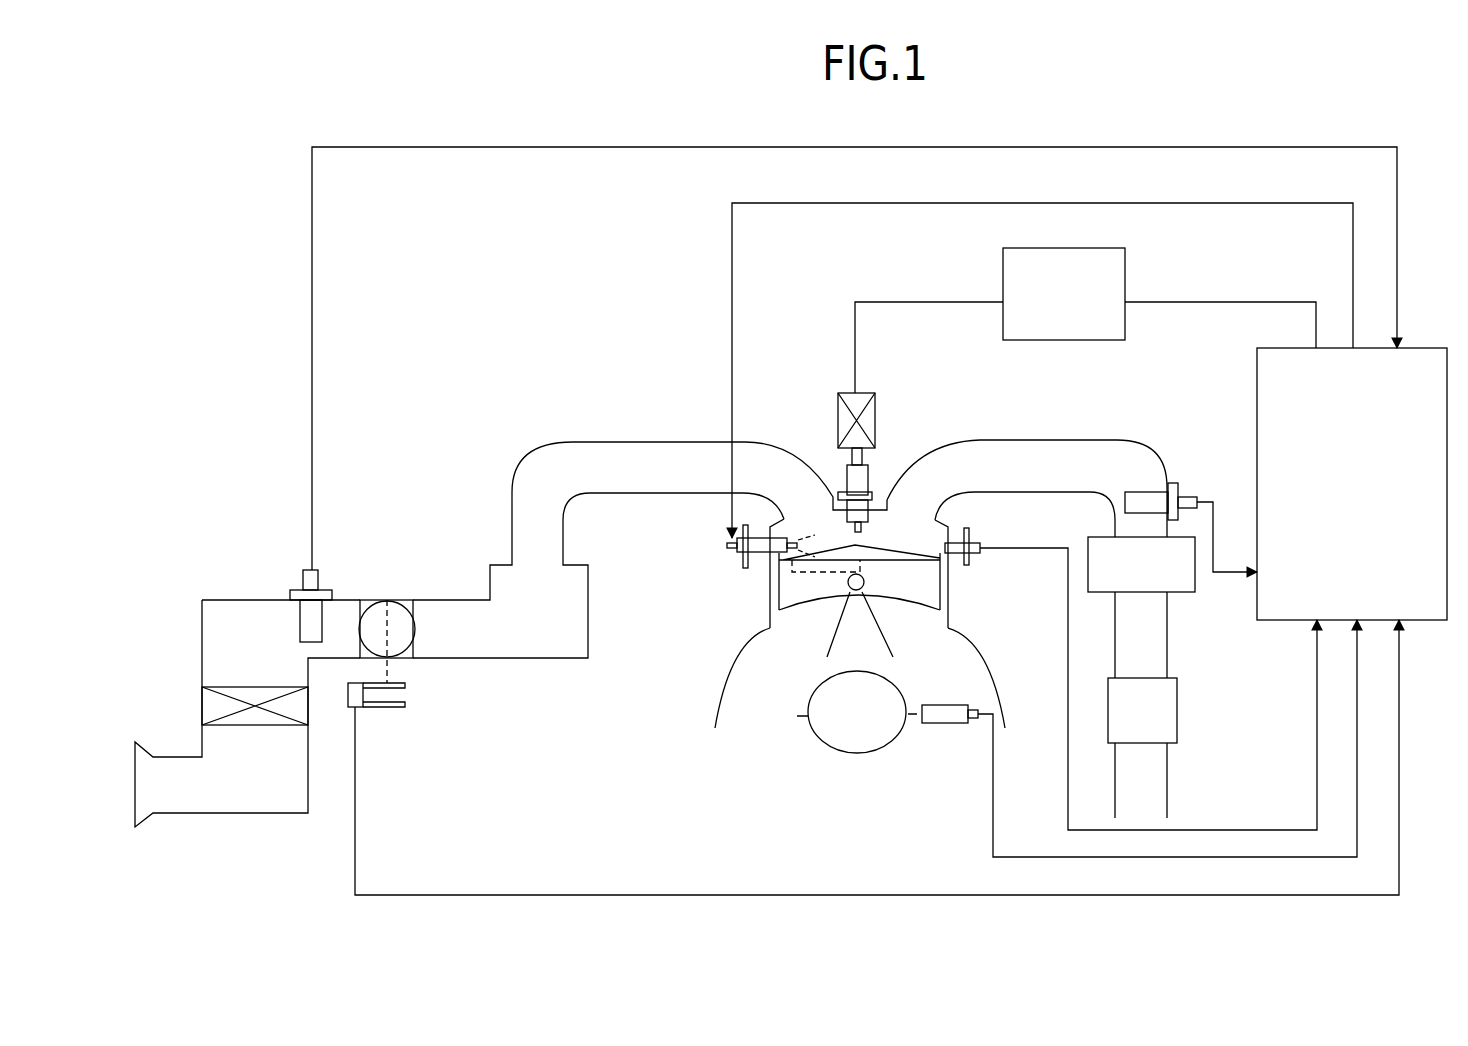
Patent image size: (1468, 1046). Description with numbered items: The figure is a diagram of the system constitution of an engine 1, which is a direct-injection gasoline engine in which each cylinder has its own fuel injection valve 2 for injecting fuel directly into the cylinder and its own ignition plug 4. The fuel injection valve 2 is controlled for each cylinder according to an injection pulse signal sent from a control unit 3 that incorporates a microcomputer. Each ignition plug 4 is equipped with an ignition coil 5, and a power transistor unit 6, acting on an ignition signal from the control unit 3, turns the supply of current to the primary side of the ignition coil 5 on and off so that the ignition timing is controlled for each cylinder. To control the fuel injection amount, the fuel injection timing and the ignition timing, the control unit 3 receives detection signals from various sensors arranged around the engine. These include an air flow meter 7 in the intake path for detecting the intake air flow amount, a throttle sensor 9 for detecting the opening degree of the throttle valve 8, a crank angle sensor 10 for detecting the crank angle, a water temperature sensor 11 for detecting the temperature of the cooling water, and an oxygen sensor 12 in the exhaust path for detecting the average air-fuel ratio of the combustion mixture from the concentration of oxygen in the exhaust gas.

The engine 1 is at (714, 668).
The fuel injection valve 2 is at (765, 553).
The control unit 3 is at (1432, 347).
The ignition plug 4 is at (872, 478).
The ignition coil 5 is at (833, 413).
The power transistor unit 6 is at (1067, 340).
The air flow meter 7 is at (303, 577).
The throttle valve 8 is at (392, 600).
The throttle sensor 9 is at (405, 697).
The crank angle sensor 10 is at (947, 723).
The water temperature sensor 11 is at (967, 567).
The oxygen sensor 12 is at (1182, 495).